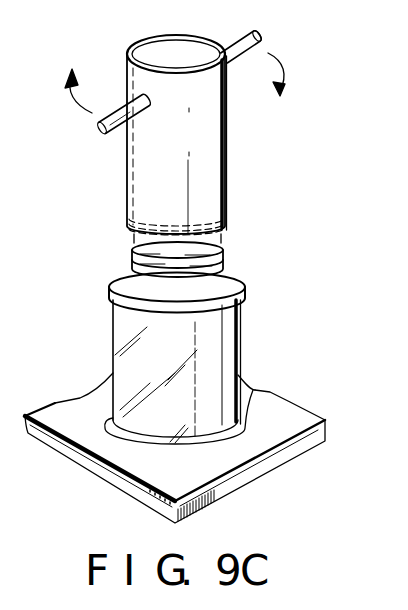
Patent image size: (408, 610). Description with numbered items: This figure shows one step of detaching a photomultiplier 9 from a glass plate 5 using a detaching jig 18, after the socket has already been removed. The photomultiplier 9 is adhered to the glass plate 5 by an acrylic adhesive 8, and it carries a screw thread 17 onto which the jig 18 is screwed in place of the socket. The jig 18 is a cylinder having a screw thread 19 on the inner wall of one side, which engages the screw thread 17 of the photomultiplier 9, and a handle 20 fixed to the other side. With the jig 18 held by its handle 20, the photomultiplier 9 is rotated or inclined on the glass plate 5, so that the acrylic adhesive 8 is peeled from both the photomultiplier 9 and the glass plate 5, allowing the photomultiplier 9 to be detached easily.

The glass plate 5 is at (233, 455).
The acrylic adhesive 8 is at (244, 424).
The photomultiplier 9 is at (228, 328).
The screw thread 17 is at (232, 268).
The jig 18 is at (234, 157).
The screw thread 19 is at (205, 216).
The handle 20 is at (97, 247).